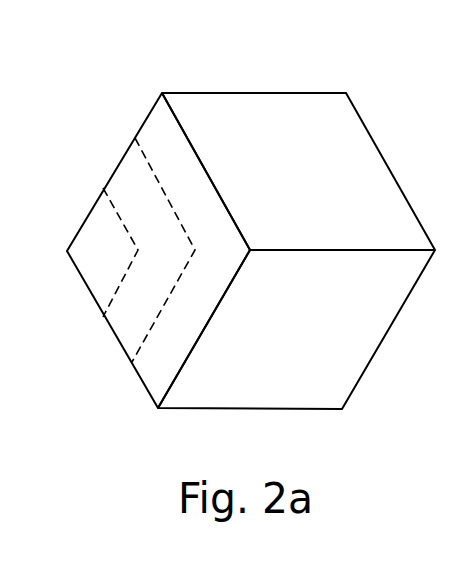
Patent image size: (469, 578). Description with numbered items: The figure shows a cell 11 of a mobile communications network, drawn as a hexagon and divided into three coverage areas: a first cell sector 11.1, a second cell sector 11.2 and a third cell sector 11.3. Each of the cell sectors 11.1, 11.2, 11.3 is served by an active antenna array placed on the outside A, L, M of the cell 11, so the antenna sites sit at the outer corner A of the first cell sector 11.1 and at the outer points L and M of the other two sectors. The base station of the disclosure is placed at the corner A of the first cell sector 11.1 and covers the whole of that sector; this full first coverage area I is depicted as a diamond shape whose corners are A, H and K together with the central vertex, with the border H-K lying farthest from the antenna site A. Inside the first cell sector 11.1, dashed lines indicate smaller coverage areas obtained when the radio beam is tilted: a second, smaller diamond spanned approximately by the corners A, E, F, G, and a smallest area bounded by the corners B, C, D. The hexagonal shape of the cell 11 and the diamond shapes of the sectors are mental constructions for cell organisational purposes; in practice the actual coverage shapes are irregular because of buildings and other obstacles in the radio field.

The cell 11 is at (226, 84).
The first cell sector 11.1 is at (158, 123).
The second cell sector 11.2 is at (273, 113).
The third cell sector 11.3 is at (353, 340).
The corner A is at (67, 251).
The corner B is at (103, 188).
The corner C is at (138, 250).
The corner D is at (103, 317).
The corner E is at (135, 138).
The corner F is at (195, 250).
The corner G is at (132, 362).
The corner H is at (162, 93).
The first coverage area I is at (250, 250).
The corner K is at (158, 408).
The outside point L is at (346, 93).
The outside point M is at (342, 409).